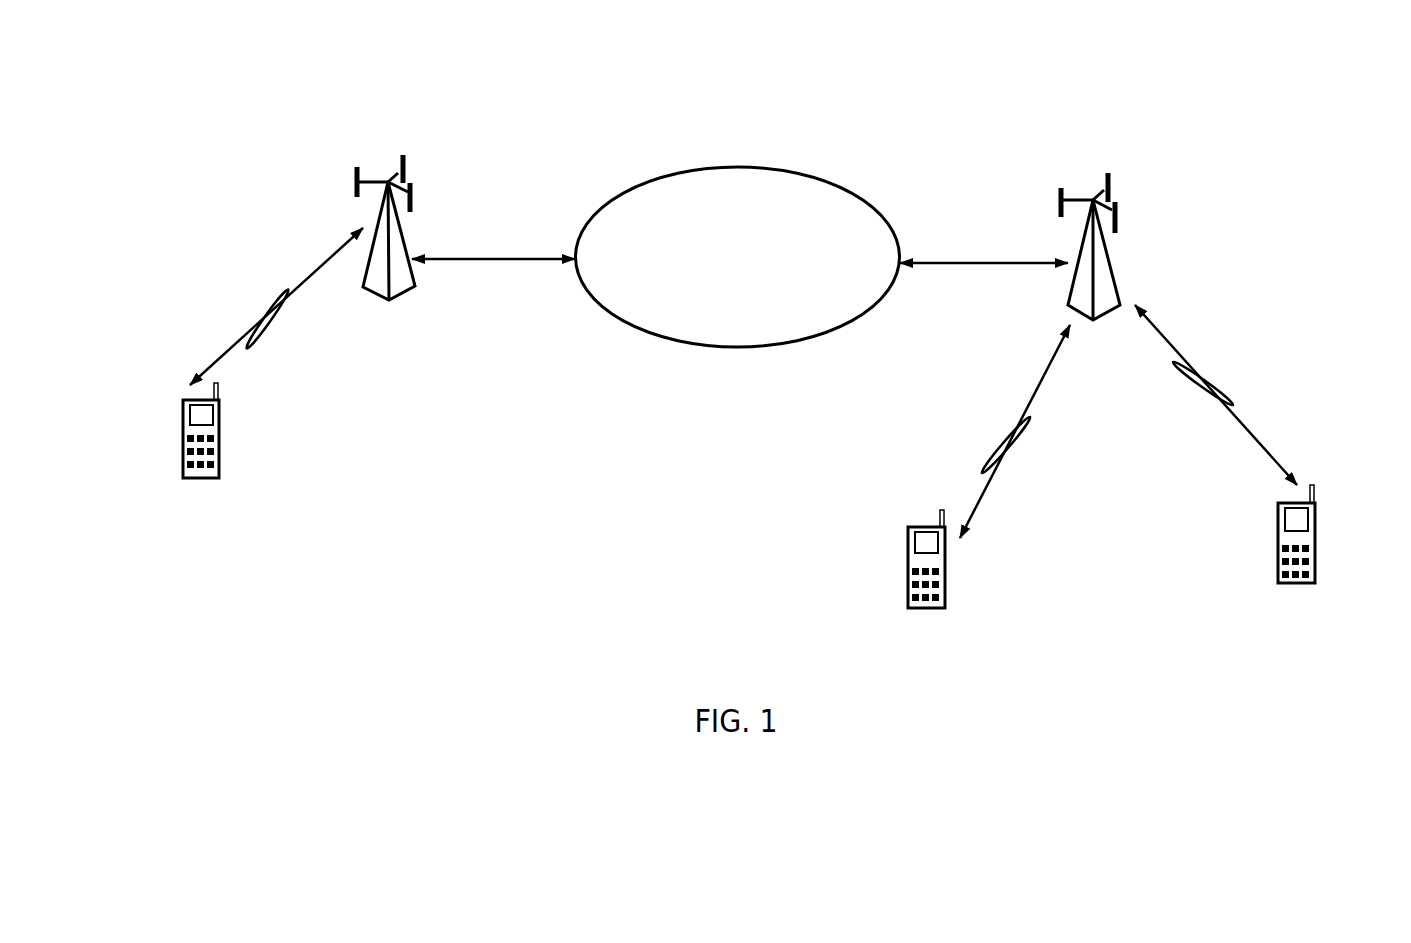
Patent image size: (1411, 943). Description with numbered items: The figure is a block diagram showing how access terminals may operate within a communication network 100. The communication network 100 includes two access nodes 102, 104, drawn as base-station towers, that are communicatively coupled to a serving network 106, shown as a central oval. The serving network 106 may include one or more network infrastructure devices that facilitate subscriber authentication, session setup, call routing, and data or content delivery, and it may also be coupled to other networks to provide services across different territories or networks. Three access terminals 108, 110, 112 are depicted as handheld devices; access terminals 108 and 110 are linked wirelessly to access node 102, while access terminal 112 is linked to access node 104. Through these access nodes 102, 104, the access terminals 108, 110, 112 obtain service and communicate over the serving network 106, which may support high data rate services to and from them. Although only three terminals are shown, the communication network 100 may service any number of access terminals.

The communication network 100 is at (867, 113).
The access node 102 is at (1108, 250).
The access node 104 is at (403, 230).
The serving network 106 is at (722, 167).
The access terminal 108 is at (1315, 542).
The access terminal 110 is at (907, 590).
The access terminal 112 is at (182, 428).